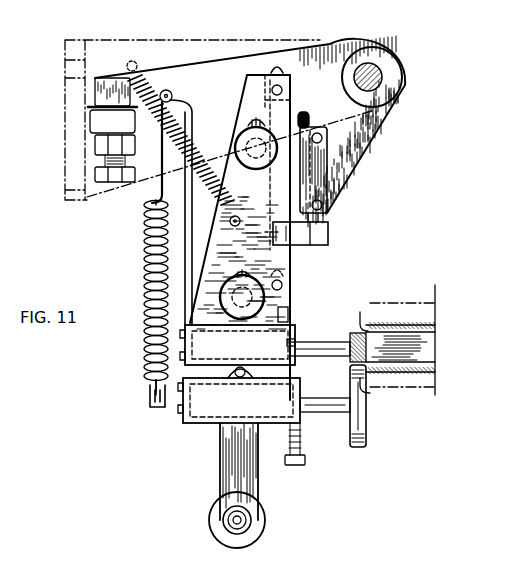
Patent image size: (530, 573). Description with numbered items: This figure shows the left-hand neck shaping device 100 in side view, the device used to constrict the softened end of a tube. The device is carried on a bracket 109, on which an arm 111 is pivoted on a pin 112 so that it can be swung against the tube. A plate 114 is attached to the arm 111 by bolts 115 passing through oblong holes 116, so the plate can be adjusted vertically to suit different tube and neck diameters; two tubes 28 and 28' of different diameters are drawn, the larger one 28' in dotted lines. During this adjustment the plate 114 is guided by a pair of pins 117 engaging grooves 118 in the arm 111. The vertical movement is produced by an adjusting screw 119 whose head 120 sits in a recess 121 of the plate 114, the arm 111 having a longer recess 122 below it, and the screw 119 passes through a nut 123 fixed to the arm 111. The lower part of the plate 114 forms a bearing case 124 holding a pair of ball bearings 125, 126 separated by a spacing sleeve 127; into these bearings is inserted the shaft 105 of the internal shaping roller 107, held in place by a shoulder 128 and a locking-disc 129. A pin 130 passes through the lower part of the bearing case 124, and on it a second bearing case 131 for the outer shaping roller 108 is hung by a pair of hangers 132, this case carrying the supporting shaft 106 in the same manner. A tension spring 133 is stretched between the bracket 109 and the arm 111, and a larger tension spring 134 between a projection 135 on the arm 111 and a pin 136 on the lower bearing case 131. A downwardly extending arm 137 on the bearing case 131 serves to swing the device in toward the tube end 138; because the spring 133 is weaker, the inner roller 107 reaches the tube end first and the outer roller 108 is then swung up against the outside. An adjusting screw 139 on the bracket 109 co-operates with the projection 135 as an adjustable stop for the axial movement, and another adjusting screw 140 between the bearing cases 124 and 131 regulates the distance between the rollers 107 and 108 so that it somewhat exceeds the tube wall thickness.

The bracket 109 is at (160, 39).
The projection 135 is at (103, 82).
The grooves 118 is at (275, 71).
The pin 112 is at (375, 68).
The holes 116 is at (252, 113).
The pins 117 is at (283, 89).
The arm 111 is at (366, 128).
The tension spring 133 is at (192, 167).
The nut 123 is at (322, 162).
The adjusting screw 119 is at (253, 160).
The neck shaping device 100 is at (355, 179).
The adjusting screw 139 is at (95, 175).
The bolts 115 is at (238, 216).
The tension spring 134 is at (148, 210).
The recess 122 is at (255, 241).
The plate 114 is at (225, 241).
The head 120 is at (329, 232).
The recess 121 is at (287, 247).
The ball bearing 126 is at (292, 330).
The shoulder 128 is at (294, 348).
The tube end 138 is at (362, 313).
The internal shaping roller 107 is at (370, 347).
The tube 28 is at (420, 340).
The bearing case 124 is at (187, 343).
The locking-disc 129 is at (139, 368).
The ball bearing 125 is at (143, 387).
The shaft 105 is at (312, 353).
The spacing sleeve 127 is at (300, 378).
The pin 136 is at (150, 402).
The bearing case 131 is at (180, 403).
The pin 130 is at (238, 376).
The outer shaping roller 108 is at (366, 395).
The supporting shaft 106 is at (338, 410).
The hangers 132 is at (250, 366).
The adjusting screw 140 is at (295, 465).
The arm 137 is at (228, 477).
The tube 28' is at (405, 361).